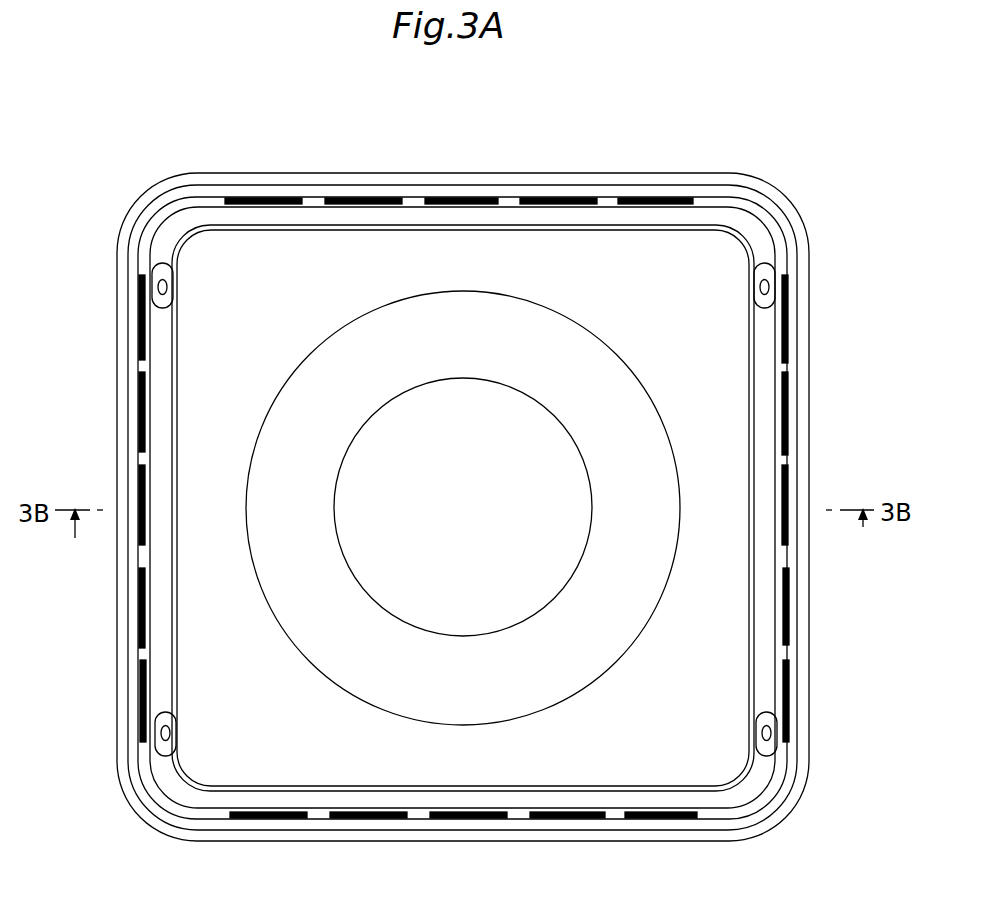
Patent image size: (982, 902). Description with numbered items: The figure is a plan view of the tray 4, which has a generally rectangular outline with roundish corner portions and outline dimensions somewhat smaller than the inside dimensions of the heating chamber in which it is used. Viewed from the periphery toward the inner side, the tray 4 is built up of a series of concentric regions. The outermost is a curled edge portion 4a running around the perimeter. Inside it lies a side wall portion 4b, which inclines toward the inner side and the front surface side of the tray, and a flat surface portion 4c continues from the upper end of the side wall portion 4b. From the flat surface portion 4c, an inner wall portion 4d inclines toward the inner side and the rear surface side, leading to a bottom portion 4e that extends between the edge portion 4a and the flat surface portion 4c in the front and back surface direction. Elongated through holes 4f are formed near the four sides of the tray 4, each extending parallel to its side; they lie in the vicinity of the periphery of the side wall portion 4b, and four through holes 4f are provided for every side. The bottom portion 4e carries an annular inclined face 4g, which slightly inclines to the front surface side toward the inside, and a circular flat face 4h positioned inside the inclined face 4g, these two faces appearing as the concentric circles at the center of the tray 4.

The tray 4 is at (782, 140).
The curled edge portion 4a is at (810, 328).
The side wall portion 4b is at (786, 358).
The flat surface portion 4c is at (777, 453).
The inner wall portion 4d is at (758, 552).
The bottom portion 4e is at (740, 611).
The elongated through holes 4f is at (558, 197).
The annular inclined face 4g is at (648, 537).
The circular flat face 4h is at (473, 535).